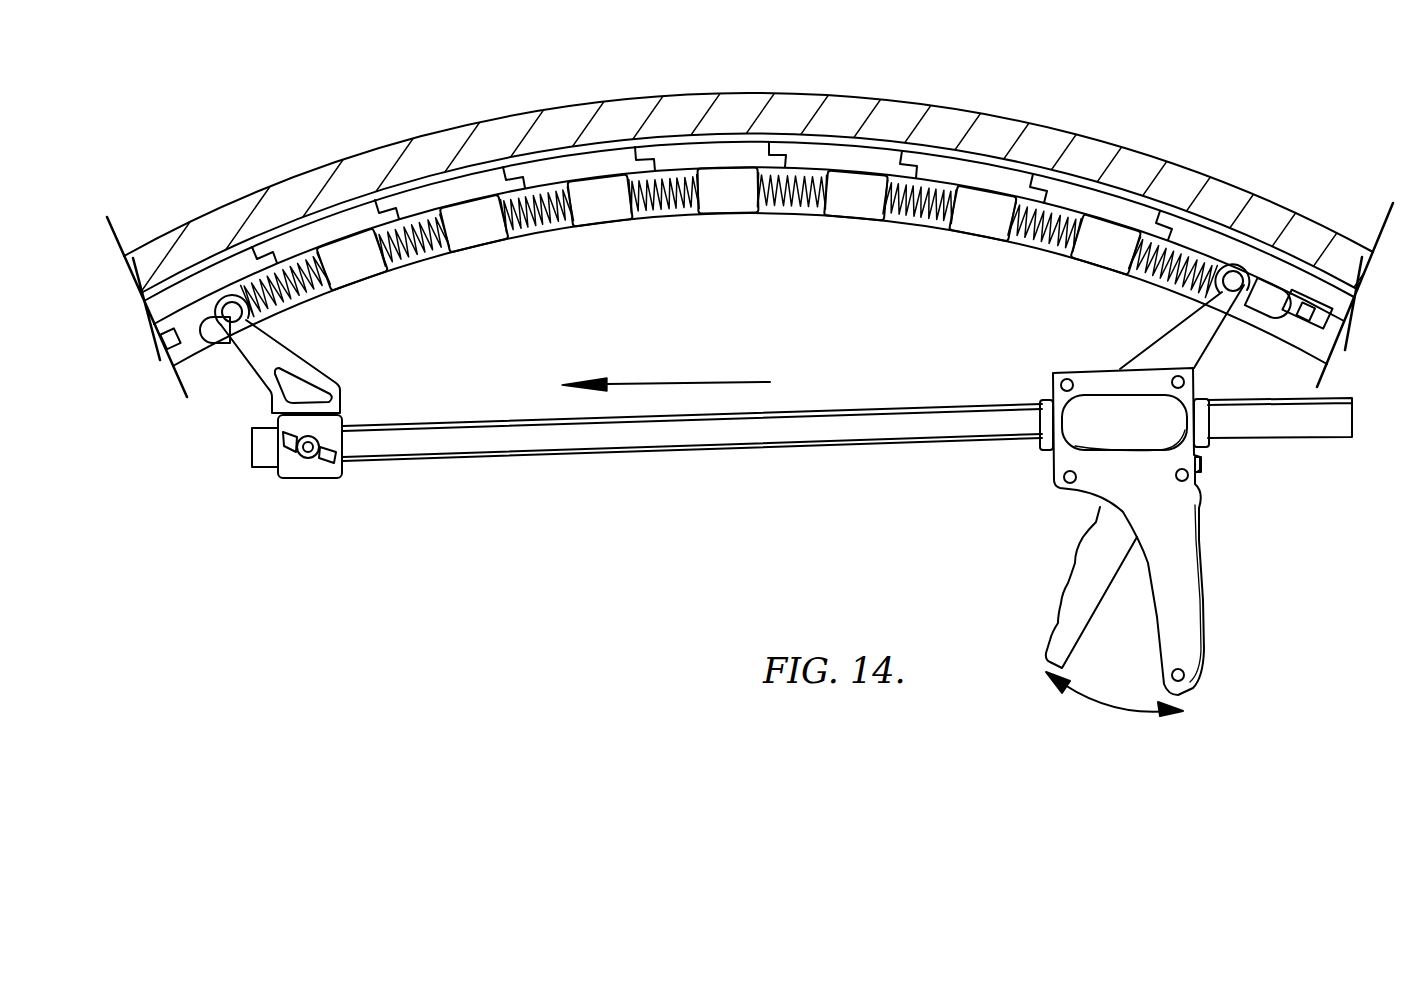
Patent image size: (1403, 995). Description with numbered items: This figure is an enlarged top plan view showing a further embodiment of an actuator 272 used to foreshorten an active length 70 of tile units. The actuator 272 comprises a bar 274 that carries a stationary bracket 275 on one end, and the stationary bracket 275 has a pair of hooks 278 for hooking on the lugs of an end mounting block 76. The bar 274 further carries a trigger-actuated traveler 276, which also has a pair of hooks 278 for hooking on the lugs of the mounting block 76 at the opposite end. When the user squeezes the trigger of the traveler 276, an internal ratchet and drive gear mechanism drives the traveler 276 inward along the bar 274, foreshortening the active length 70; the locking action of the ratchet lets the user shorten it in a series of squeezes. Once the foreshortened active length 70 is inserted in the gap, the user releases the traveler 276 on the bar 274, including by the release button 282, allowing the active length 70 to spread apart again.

The active length 70 is at (738, 247).
The mounting block 76 is at (255, 319).
The actuator 272 is at (786, 500).
The bar 274 is at (633, 458).
The stationary bracket 275 is at (311, 480).
The trigger-actuated traveler 276 is at (1196, 594).
The hooks 278 is at (322, 385).
The release button 282 is at (1204, 470).